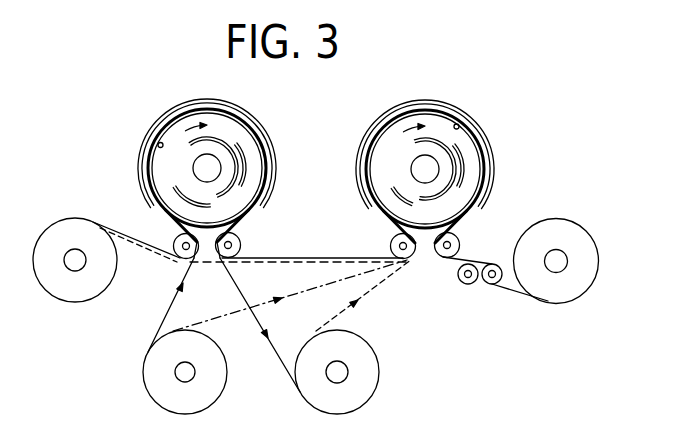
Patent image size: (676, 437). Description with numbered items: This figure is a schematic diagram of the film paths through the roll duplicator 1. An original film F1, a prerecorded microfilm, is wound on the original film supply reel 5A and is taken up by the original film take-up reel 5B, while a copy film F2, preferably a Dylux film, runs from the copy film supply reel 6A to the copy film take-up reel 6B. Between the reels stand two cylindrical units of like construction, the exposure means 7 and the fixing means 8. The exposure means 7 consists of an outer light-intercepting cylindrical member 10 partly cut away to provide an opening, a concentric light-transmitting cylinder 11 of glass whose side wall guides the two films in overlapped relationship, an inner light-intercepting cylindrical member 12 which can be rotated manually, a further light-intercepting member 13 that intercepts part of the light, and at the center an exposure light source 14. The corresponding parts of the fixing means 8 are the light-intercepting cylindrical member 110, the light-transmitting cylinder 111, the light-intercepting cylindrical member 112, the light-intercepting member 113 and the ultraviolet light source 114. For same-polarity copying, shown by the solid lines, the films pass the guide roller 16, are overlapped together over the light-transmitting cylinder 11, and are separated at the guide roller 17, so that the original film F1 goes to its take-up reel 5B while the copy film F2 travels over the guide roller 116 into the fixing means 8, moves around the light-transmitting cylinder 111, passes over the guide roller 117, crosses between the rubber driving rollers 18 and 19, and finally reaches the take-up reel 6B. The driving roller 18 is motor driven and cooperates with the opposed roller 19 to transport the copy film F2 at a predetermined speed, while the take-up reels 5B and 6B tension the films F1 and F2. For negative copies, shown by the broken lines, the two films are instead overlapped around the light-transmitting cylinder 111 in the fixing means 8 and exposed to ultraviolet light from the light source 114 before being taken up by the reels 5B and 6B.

The roll duplicator 1 is at (333, 319).
The original film supply reel 5A is at (146, 372).
The original film take-up reel 5B is at (366, 374).
The copy film supply reel 6A is at (71, 228).
The copy film take-up reel 6B is at (562, 228).
The exposure means 7 is at (215, 89).
The fixing means 8 is at (428, 89).
The light-intercepting cylindrical member 10 is at (173, 108).
The light-transmitting cylinder 11 is at (159, 145).
The light-intercepting cylindrical member 12 is at (243, 152).
The light-intercepting member 13 is at (222, 140).
The exposure light source 14 is at (195, 168).
The guide roller 16 is at (175, 238).
The guide roller 17 is at (240, 245).
The driving roller 18 is at (461, 276).
The driving roller 19 is at (491, 286).
The light-intercepting cylindrical member 110 is at (386, 110).
The light-transmitting cylinder 111 is at (459, 127).
The light-intercepting cylindrical member 112 is at (462, 172).
The light-intercepting member 113 is at (455, 148).
The light source 114 is at (420, 164).
The guide roller 116 is at (393, 243).
The guide roller 117 is at (459, 245).
The original film F1 is at (165, 312).
The copy film F2 is at (135, 240).